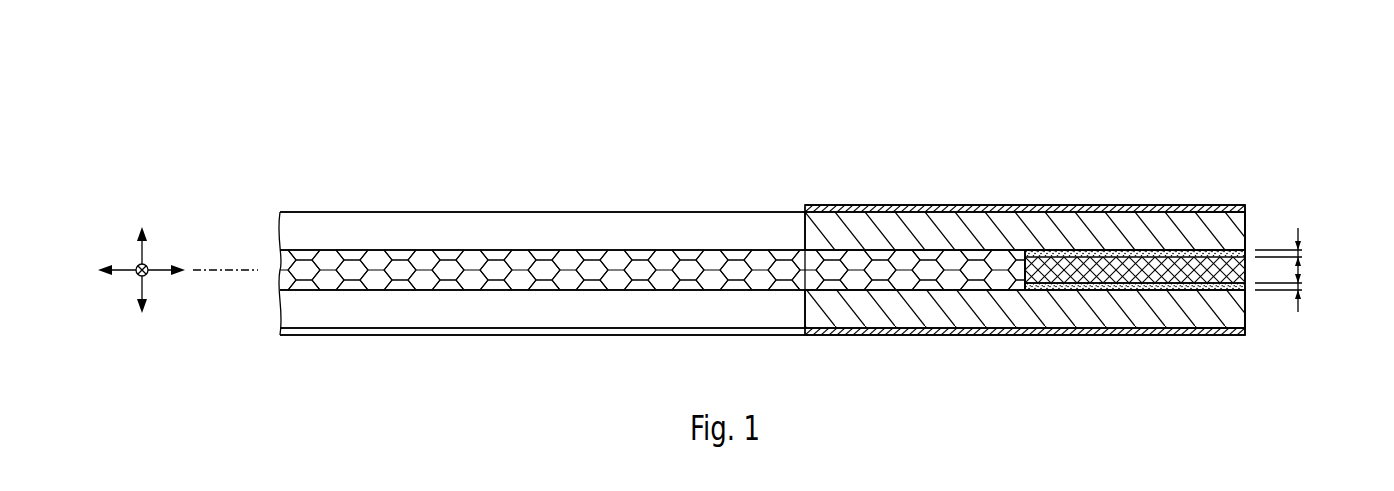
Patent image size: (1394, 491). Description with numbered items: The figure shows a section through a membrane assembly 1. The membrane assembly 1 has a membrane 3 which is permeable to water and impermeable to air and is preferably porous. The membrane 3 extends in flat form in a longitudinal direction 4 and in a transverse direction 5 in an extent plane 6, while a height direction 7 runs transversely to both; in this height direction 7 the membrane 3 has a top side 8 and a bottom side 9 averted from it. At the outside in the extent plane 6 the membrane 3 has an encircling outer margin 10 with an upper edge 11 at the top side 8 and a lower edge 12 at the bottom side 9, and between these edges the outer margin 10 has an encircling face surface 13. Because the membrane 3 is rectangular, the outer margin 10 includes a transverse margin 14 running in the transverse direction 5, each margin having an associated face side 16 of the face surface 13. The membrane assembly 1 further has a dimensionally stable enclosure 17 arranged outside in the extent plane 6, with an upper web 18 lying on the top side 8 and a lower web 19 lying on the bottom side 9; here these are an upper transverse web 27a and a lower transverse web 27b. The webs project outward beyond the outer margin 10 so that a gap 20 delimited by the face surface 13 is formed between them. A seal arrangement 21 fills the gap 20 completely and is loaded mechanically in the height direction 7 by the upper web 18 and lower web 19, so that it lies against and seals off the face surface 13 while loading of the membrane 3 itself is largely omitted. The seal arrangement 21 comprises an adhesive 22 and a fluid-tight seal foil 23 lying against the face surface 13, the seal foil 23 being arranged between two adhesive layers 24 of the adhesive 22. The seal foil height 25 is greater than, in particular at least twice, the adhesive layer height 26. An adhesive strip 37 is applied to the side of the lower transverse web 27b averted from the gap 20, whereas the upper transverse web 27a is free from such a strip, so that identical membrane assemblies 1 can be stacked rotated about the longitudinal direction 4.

The membrane assembly 1 is at (1318, 152).
The membrane 3 is at (594, 235).
The longitudinal direction 4 is at (160, 276).
The transverse direction 5 is at (150, 266).
The extent plane 6 is at (222, 266).
The height direction 7 is at (142, 250).
The top side 8 is at (478, 250).
The bottom side 9 is at (478, 292).
The outer margin 10 is at (1030, 232).
The upper edge 11 is at (1023, 250).
The lower edge 12 is at (1027, 290).
The face surface 13 is at (1038, 293).
The transverse margin 14 is at (1058, 255).
The face side 16 is at (1028, 262).
The enclosure 17 is at (1240, 130).
The upper web 18 is at (922, 222).
The lower web 19 is at (928, 320).
The gap 20 is at (1143, 290).
The seal arrangement 21 is at (1150, 233).
The adhesive 22 is at (1212, 212).
The seal foil 23 is at (1105, 290).
The adhesive layer 24 is at (1205, 328).
The seal foil height 25 is at (1302, 270).
The adhesive layer height 26 is at (1302, 251).
The upper transverse web 27a is at (1025, 231).
The lower transverse web 27b is at (1025, 309).
The adhesive strip 37 is at (867, 212).